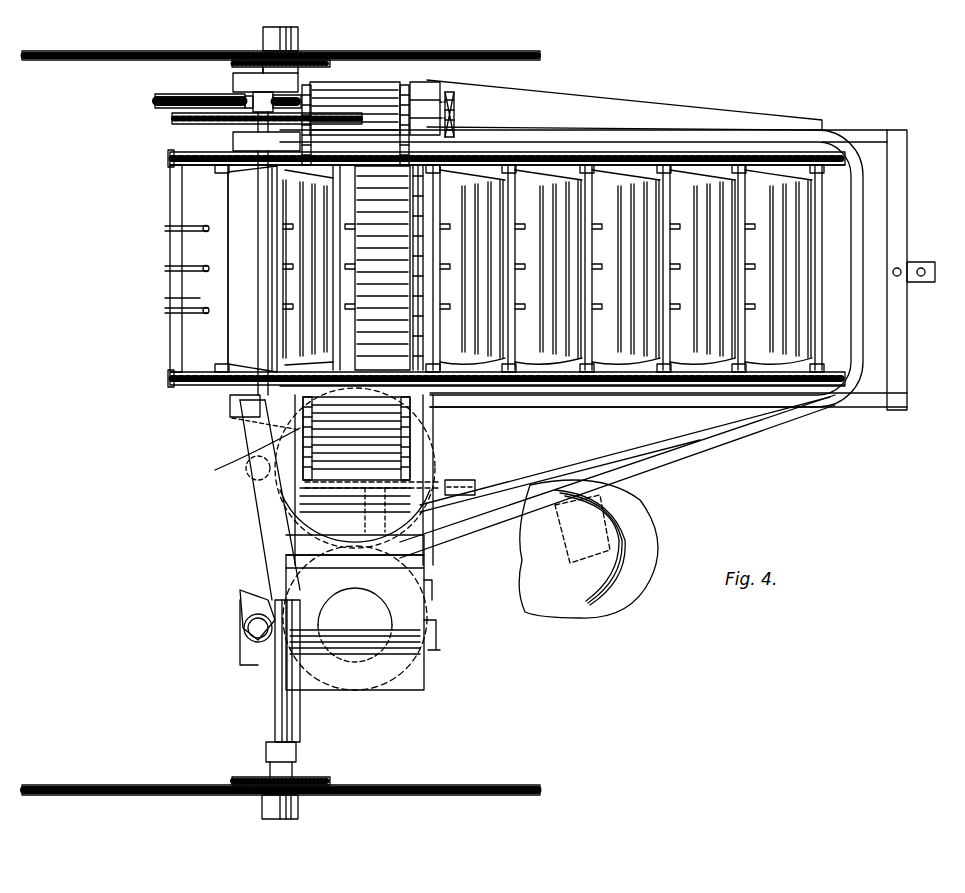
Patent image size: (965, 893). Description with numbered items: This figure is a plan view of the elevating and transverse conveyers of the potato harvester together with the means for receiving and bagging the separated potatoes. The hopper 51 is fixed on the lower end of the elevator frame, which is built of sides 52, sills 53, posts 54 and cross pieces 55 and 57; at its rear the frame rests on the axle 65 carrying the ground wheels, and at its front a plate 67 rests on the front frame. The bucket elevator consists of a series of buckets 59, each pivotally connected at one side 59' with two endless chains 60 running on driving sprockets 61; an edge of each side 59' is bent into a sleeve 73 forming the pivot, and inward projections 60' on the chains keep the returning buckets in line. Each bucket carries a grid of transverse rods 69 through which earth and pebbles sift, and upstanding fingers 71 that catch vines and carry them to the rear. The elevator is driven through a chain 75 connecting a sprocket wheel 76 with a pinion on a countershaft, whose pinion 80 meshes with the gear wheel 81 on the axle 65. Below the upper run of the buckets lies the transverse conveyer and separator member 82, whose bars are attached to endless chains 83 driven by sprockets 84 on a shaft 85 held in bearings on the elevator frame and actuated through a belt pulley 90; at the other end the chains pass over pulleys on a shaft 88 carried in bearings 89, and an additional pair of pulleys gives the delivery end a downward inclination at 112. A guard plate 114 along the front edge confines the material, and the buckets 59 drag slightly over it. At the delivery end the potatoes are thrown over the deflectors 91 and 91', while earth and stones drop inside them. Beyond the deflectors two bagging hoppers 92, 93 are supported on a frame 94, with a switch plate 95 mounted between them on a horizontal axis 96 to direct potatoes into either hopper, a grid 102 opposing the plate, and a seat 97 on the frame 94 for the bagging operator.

The hopper 51 is at (850, 338).
The sides 52 is at (520, 150).
The sills 53 is at (642, 112).
The posts 54 is at (233, 139).
The cross piece 55 is at (896, 140).
The cross piece 57 is at (243, 528).
The bucket 59 is at (522, 307).
The bucket side 59' is at (159, 299).
The endless chains 60 is at (497, 270).
The bucket-supporting projections 60' is at (507, 268).
The driving sprockets 61 is at (168, 160).
The axle 65 is at (275, 712).
The plate 67 is at (919, 262).
The transverse rods 69 is at (300, 282).
The fingers or hooks 71 is at (168, 228).
The sleeve 73 is at (228, 210).
The chain 75 is at (168, 154).
The sprocket wheel 76 is at (173, 120).
The pinion 80 is at (228, 92).
The gear wheel 81 is at (155, 100).
The conveyer and separator member 82 is at (372, 118).
The endless chains 83 is at (420, 420).
The sprockets 84 is at (307, 88).
The shaft 85 is at (458, 108).
The shaft 88 is at (240, 420).
The bearings 89 is at (246, 454).
The belt pulley 90 is at (452, 115).
The rear deflector 91 is at (355, 468).
The deflector 91' is at (381, 510).
The inner bagging hopper 92 is at (425, 500).
The outer bagging hopper 93 is at (418, 610).
The frame 94 is at (675, 452).
The switch plate 95 is at (359, 623).
The horizontal axis 96 is at (285, 555).
The seat 97 is at (590, 618).
The grid 102 is at (426, 682).
The inclined conveyer end 112 is at (420, 457).
The guard plate 114 is at (418, 342).